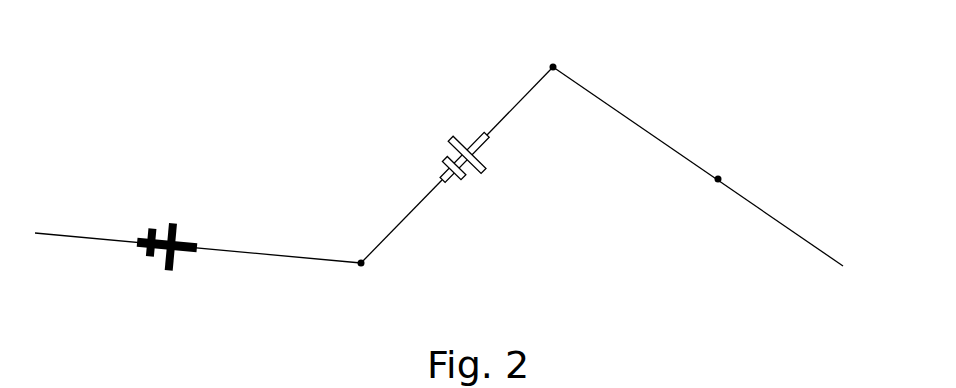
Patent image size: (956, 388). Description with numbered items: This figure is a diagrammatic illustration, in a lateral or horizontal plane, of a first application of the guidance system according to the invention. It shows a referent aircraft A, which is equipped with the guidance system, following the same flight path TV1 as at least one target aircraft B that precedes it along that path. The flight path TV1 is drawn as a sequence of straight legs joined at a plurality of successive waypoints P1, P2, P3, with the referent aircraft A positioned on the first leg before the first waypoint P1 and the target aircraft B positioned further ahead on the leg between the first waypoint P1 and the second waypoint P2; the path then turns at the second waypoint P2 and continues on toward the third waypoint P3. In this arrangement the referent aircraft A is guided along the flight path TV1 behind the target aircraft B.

The flight path TV1 is at (283, 270).
The referent aircraft A is at (172, 270).
The target aircraft B is at (483, 173).
The waypoint P1 is at (363, 265).
The waypoint P2 is at (555, 66).
The waypoint P3 is at (720, 178).